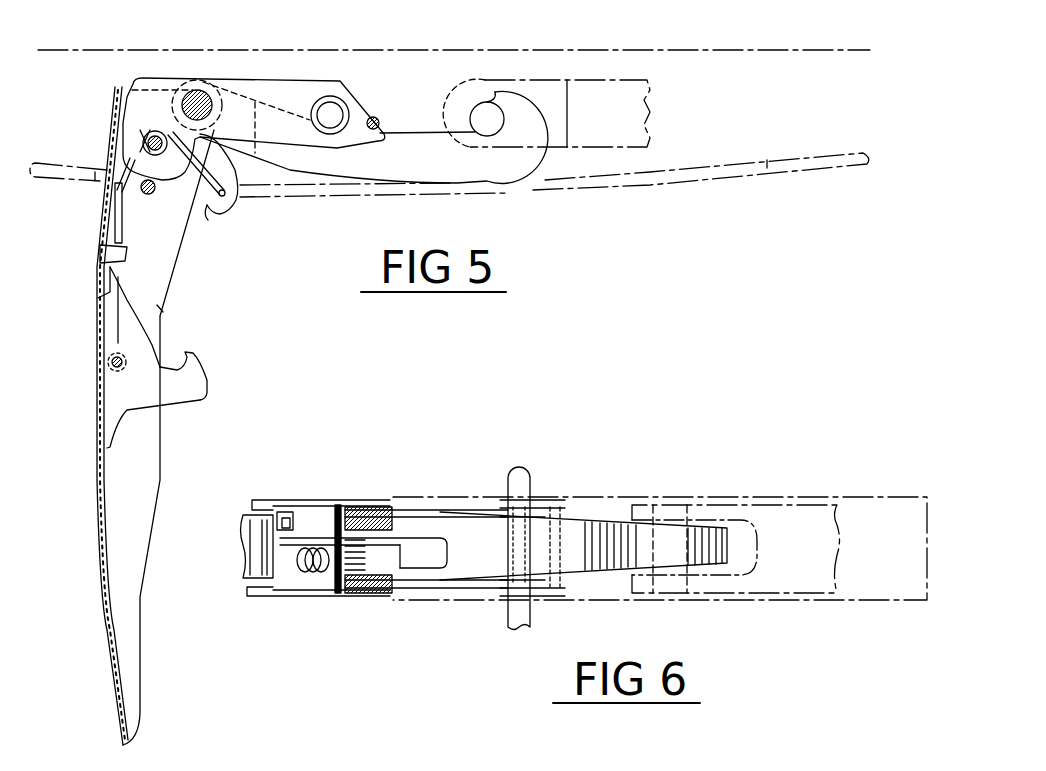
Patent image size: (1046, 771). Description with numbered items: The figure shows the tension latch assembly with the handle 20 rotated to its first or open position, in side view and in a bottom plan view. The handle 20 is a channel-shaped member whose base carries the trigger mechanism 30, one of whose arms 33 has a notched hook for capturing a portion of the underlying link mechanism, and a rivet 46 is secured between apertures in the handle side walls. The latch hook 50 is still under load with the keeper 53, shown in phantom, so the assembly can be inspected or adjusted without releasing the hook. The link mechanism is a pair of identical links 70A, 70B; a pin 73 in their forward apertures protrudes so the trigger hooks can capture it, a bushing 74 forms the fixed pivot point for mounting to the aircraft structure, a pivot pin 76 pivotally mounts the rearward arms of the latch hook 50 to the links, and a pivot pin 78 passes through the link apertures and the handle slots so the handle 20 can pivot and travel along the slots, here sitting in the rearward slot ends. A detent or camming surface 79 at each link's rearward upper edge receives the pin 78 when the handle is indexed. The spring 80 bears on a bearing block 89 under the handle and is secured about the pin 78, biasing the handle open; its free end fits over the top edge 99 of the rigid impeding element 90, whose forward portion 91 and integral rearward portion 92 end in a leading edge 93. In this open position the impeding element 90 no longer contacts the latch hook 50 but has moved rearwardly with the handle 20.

In FIG. 5, the handle 20 is at (104, 637).
In FIG. 6, the handle 20 is at (260, 492).
In FIG. 5, the trigger mechanism 30 is at (94, 402).
In FIG. 6, the trigger mechanism 30 is at (240, 532).
In FIG. 5, the arm 33 is at (198, 363).
In FIG. 5, the rivet 46 is at (153, 195).
In FIG. 6, the rivet 46 is at (340, 593).
In FIG. 5, the latch hook 50 is at (514, 173).
In FIG. 6, the latch hook 50 is at (604, 517).
In FIG. 5, the keeper 53 is at (540, 80).
In FIG. 6, the keeper 53 is at (741, 487).
In FIG. 6, the link 70A is at (470, 587).
In FIG. 5, the link 70B is at (303, 80).
In FIG. 6, the link 70B is at (437, 510).
In FIG. 5, the pin 73 is at (377, 120).
In FIG. 6, the pin 73 is at (562, 520).
In FIG. 5, the bushing 74 is at (322, 97).
In FIG. 6, the bushing 74 is at (532, 507).
In FIG. 5, the pivot pin 76 is at (203, 93).
In FIG. 5, the pivot pin 78 is at (150, 143).
In FIG. 6, the pivot pin 78 is at (363, 510).
In FIG. 5, the camming surface 79 is at (115, 173).
In FIG. 5, the spring 80 is at (133, 213).
In FIG. 6, the spring 80 is at (300, 578).
In FIG. 5, the bearing block 89 is at (160, 309).
In FIG. 6, the bearing block 89 is at (287, 520).
In FIG. 5, the impeding element 90 is at (239, 228).
In FIG. 6, the forward portion 91 is at (430, 553).
In FIG. 6, the rearward portion 92 is at (287, 550).
In FIG. 5, the leading end edge 93 is at (234, 198).
In FIG. 5, the top edge 99 is at (208, 216).